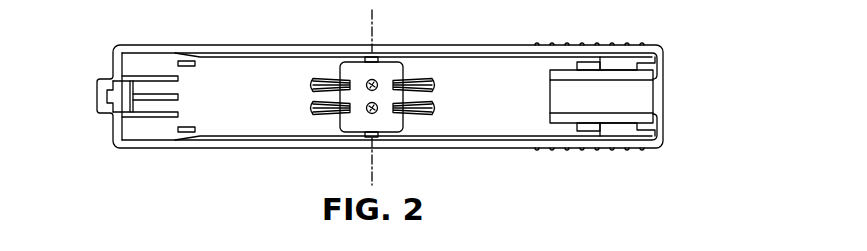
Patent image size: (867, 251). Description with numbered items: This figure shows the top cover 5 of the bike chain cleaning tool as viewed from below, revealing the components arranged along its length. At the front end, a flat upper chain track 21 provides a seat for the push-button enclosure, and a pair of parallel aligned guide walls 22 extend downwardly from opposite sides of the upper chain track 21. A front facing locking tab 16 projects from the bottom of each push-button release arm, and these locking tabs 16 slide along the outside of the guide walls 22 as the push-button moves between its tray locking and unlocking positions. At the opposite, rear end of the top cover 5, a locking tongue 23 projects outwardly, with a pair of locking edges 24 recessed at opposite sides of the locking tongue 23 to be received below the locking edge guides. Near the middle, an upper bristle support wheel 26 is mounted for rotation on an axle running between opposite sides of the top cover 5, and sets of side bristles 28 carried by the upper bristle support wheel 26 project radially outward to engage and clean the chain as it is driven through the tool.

The top cover 5 is at (670, 55).
The front facing locking tab 16 is at (587, 62).
The upper chain track 21 is at (652, 94).
The guide walls 22 is at (622, 70).
The locking tongue 23 is at (97, 96).
The locking edges 24 is at (113, 57).
The upper bristle support wheel 26 is at (354, 68).
The side bristles 28 is at (325, 78).